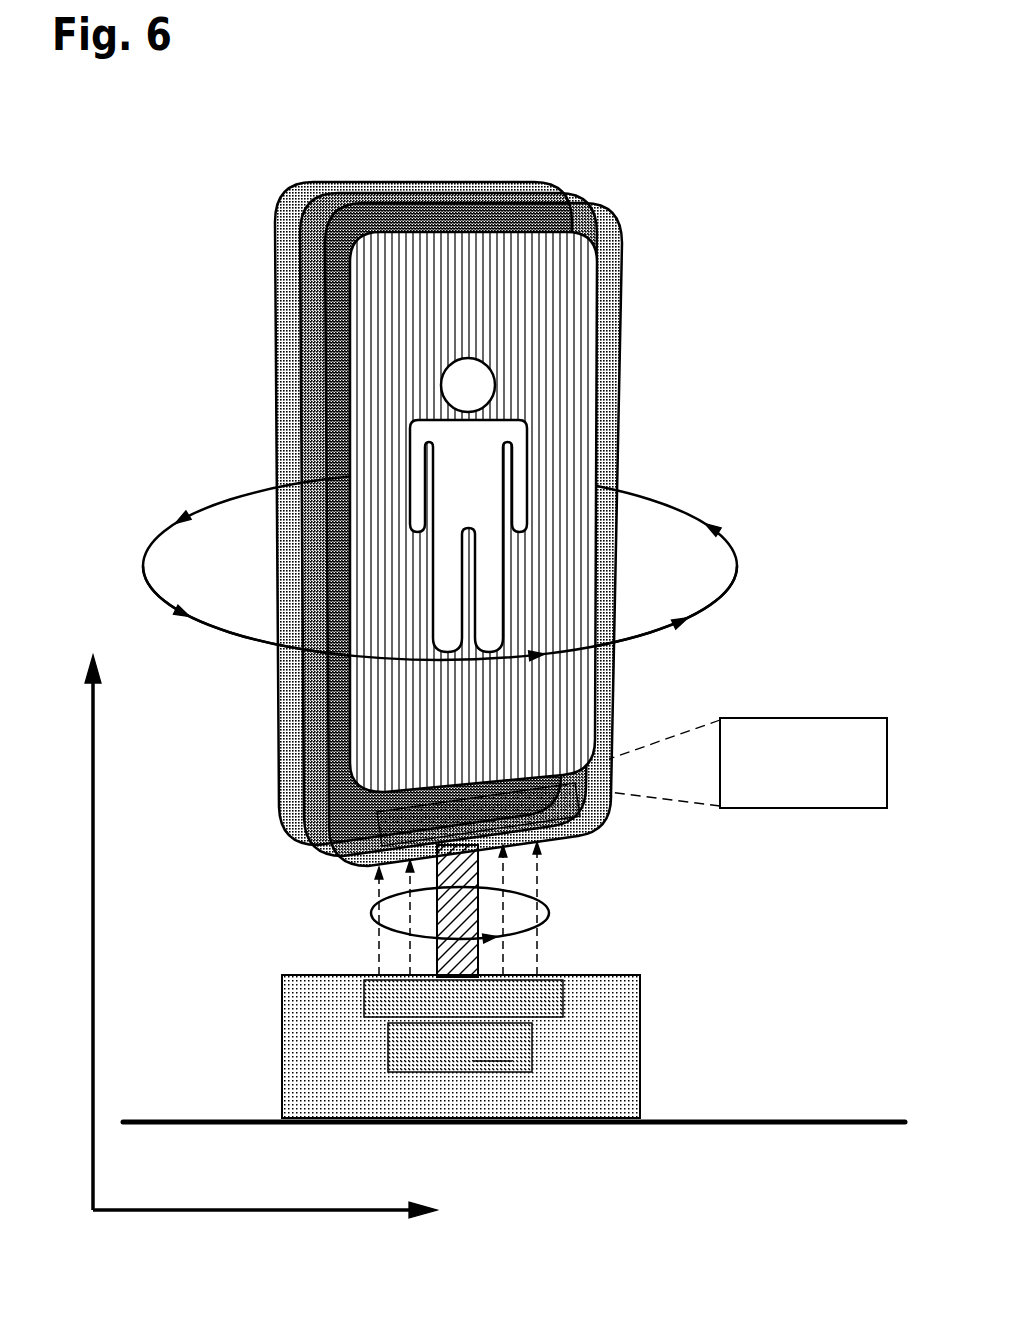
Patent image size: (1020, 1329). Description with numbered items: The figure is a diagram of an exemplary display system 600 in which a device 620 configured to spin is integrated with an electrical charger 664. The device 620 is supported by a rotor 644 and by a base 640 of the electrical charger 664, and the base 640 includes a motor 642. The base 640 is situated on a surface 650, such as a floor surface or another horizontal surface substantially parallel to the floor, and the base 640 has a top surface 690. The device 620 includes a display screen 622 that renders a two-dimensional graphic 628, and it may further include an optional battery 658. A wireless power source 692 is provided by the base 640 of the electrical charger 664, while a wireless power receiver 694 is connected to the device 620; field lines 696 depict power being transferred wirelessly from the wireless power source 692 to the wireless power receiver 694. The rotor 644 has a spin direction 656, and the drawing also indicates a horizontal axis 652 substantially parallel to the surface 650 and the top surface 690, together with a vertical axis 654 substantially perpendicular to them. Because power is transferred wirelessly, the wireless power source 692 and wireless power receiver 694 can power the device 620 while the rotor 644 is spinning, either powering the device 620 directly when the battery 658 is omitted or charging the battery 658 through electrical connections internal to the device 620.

The display system 600 is at (652, 153).
The device 620 is at (628, 262).
The display screen 622 is at (445, 298).
The 2D graphic 628 is at (502, 365).
The base 640 is at (640, 1064).
The motor 642 is at (460, 1047).
The rotor 644 is at (479, 960).
The surface 650 is at (822, 1120).
The horizontal axis 652 is at (254, 1208).
The vertical axis 654 is at (91, 852).
The spin direction 656 is at (727, 601).
The battery 658 is at (815, 718).
The electrical charger 664 is at (214, 731).
The top surface 690 is at (630, 962).
The wireless power source 692 is at (364, 1005).
The wireless power receiver 694 is at (365, 828).
The field lines 696 is at (380, 952).